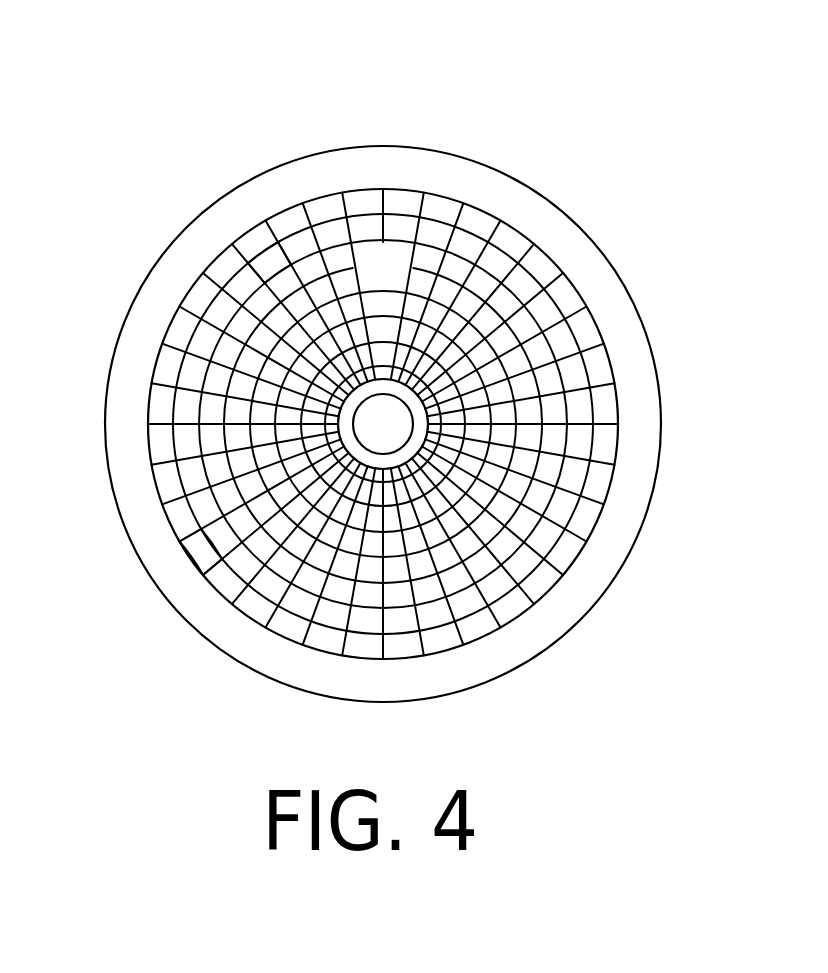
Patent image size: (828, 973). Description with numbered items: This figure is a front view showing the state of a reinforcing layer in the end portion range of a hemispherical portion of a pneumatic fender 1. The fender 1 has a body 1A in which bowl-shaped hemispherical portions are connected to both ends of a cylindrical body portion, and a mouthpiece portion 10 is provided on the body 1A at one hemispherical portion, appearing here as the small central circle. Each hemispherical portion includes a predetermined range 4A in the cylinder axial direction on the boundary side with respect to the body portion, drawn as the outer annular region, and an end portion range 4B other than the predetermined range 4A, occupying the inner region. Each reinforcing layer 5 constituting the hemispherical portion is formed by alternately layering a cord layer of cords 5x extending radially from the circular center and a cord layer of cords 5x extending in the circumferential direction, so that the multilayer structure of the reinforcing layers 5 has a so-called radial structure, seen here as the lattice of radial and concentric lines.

The pneumatic fender 1 is at (523, 152).
The body 1A is at (557, 216).
The predetermined range 4A is at (132, 342).
The end portion range 4B is at (566, 304).
The reinforcing layer 5 is at (622, 400).
The cord 5x is at (283, 253).
The mouthpiece portion 10 is at (381, 386).